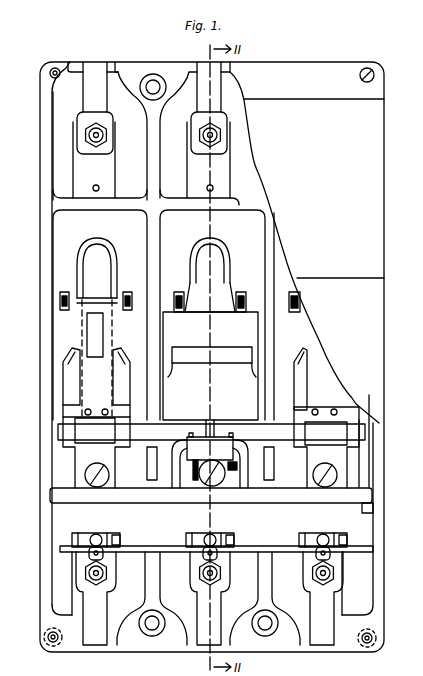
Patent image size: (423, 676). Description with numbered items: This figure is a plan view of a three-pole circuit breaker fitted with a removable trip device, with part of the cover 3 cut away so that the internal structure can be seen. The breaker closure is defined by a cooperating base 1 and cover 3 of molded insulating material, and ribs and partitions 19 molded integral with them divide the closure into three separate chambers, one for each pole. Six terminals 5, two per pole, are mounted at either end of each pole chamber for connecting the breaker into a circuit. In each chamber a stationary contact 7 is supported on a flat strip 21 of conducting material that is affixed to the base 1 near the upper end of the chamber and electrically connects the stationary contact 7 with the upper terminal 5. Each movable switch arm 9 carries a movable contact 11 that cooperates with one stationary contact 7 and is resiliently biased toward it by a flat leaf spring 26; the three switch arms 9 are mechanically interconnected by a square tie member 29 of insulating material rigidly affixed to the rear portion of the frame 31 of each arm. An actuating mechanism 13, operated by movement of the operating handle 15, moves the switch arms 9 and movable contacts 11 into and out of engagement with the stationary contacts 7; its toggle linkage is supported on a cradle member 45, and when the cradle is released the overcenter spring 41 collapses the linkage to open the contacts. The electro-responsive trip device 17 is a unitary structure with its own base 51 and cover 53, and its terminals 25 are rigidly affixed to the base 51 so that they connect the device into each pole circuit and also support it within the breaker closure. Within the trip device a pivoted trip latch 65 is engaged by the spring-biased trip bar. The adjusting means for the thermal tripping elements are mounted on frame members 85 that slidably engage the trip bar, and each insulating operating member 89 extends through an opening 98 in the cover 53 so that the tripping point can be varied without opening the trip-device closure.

The base 1 is at (41, 148).
The cover 3 is at (370, 122).
The terminals 5 is at (100, 93).
The stationary contacts 7 is at (108, 245).
The movable switch arms 9 is at (102, 385).
The movable contact 11 is at (102, 272).
The actuating mechanism 13 is at (217, 393).
The operating handle 15 is at (216, 352).
The electro-responsive trip device 17 is at (158, 525).
The ribs and partitions 19 is at (125, 202).
The flat strip 21 is at (80, 225).
The terminals of the trip device 25 is at (85, 473).
The flat leaf spring 26 is at (76, 366).
The square tie member 29 is at (136, 428).
The frame of the switch arm 31 is at (61, 384).
The overcenter spring 41 is at (183, 457).
The cradle member 45 is at (216, 442).
The base of the trip device 51 is at (360, 493).
The cover of the trip device 53 is at (368, 513).
The trip latch 65 is at (234, 441).
The frame member 85 is at (106, 533).
The operating member 89 is at (94, 535).
The opening 98 is at (121, 539).